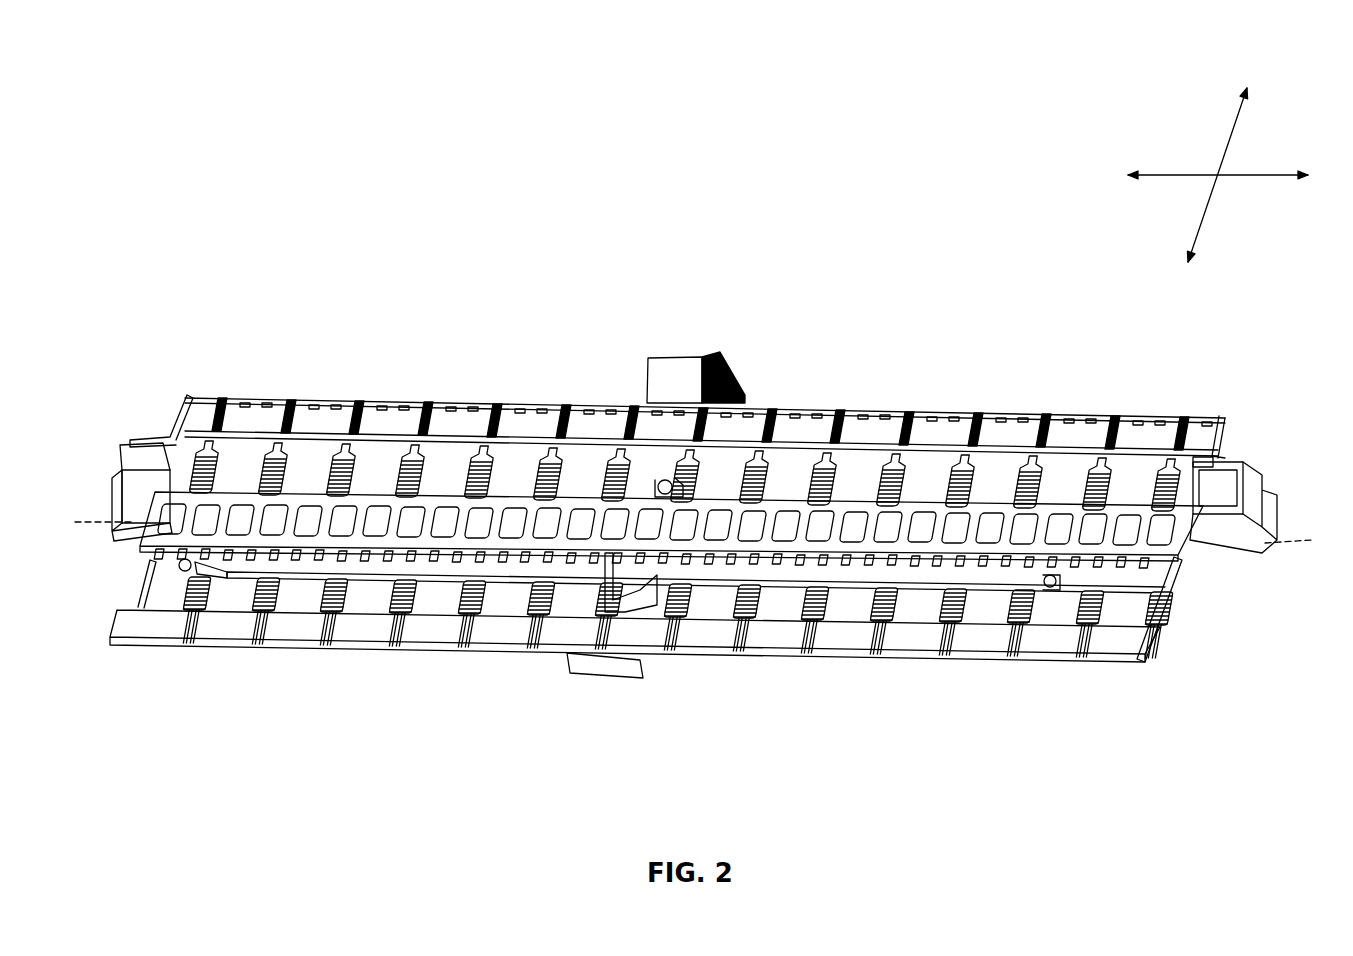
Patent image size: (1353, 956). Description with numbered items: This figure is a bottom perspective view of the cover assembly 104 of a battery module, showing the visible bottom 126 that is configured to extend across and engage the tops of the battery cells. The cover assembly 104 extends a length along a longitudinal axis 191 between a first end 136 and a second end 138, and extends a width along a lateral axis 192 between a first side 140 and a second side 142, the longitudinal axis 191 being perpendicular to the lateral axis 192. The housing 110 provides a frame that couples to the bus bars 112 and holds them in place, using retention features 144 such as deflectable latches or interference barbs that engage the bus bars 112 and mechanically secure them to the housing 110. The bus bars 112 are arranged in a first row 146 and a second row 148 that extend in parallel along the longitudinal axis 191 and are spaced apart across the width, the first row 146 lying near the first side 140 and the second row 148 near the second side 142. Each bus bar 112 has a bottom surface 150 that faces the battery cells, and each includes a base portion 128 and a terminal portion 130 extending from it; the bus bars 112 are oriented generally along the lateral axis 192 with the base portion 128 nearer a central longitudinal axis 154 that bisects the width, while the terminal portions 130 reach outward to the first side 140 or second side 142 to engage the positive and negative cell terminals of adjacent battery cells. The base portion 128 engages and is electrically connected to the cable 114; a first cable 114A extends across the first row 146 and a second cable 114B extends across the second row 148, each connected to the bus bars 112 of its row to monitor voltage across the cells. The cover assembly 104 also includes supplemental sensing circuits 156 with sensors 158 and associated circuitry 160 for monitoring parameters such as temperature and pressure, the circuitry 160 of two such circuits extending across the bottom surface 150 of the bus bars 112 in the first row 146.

The cover assembly 104 is at (905, 216).
The housing 110 is at (968, 507).
The bus bars 112 is at (1055, 487).
The cable 114 is at (815, 610).
The first cable 114A is at (940, 605).
The second cable 114B is at (1017, 503).
The bottom 126 is at (204, 412).
The base portion 128 is at (1040, 490).
The terminal portion 130 is at (1045, 470).
The first end 136 is at (150, 414).
The second end 138 is at (1236, 432).
The first side 140 is at (222, 660).
The second side 142 is at (278, 396).
The retention features 144 is at (1145, 572).
The first row 146 is at (1177, 622).
The second row 148 is at (1197, 459).
The bottom surface 150 is at (1158, 465).
The central longitudinal axis 154 is at (92, 522).
The supplemental sensing circuits 156 is at (158, 579).
The sensors 158 is at (663, 486).
The circuitry 160 is at (228, 578).
The longitudinal axis 191 is at (1197, 174).
The lateral axis 192 is at (1237, 128).